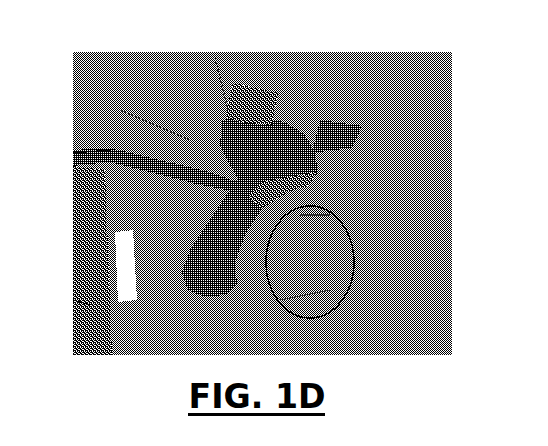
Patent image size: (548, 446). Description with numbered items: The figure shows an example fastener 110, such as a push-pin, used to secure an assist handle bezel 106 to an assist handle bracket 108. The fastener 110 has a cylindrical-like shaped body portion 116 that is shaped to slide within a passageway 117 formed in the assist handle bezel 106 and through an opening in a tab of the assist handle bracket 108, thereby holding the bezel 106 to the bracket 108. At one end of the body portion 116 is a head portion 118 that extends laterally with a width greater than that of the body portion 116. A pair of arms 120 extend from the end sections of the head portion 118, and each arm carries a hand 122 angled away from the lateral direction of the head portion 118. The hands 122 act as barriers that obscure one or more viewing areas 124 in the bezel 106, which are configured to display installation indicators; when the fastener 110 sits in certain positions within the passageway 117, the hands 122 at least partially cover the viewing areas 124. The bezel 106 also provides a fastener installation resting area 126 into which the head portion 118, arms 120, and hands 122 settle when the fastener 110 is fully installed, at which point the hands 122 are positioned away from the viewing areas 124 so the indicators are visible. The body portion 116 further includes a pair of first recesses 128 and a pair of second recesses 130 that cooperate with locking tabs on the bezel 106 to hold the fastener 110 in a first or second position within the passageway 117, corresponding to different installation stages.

The assist handle bezel 106 is at (73, 300).
The assist handle bracket 108 is at (73, 153).
The fastener 110 is at (256, 70).
The cylindrical-like shaped body portion 116 is at (340, 170).
The passageway 117 is at (275, 282).
The head portion 118 is at (216, 75).
The arms 120 is at (235, 118).
The hands 122 is at (333, 117).
The viewing areas 124 is at (335, 252).
The fastener installation resting area 126 is at (345, 272).
The first recesses 128 is at (160, 152).
The second recesses 130 is at (165, 128).